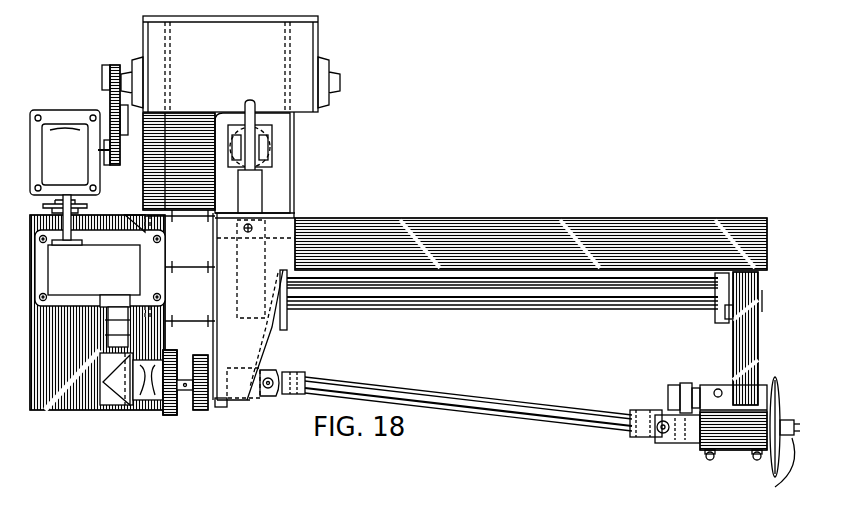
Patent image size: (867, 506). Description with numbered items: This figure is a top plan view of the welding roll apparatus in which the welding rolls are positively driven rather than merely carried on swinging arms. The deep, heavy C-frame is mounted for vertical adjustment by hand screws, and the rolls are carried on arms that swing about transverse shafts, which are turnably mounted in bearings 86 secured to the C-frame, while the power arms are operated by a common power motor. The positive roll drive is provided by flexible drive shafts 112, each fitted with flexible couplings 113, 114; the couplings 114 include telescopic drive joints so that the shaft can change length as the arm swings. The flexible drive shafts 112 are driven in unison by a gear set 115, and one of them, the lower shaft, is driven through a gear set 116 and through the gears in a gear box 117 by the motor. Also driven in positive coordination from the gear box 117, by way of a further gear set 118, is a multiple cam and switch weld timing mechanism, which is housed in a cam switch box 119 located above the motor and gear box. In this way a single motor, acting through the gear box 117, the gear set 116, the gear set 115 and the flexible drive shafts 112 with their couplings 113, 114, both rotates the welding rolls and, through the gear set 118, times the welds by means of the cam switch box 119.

The bearing 86 is at (720, 300).
The flexible drive shaft 112 is at (440, 398).
The flexible coupling 113 is at (283, 378).
The flexible coupling with telescopic drive joint 114 is at (632, 432).
The gear set 115 is at (197, 413).
The gear set 116 is at (169, 416).
The gear box 117 is at (104, 281).
The gear set 118 is at (106, 104).
The cam switch box 119 is at (250, 26).